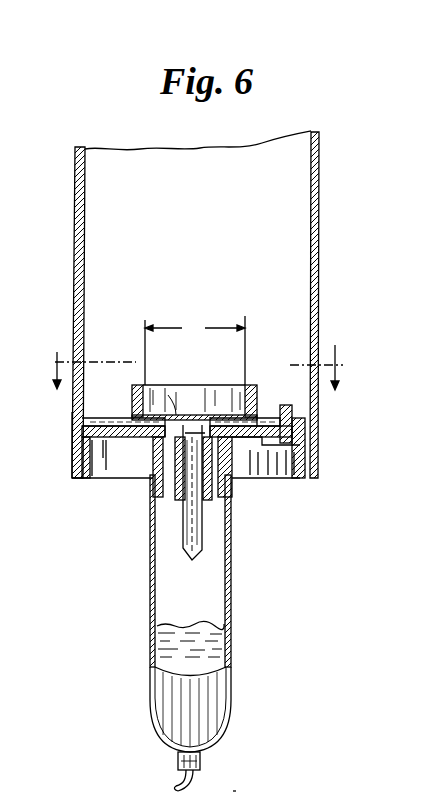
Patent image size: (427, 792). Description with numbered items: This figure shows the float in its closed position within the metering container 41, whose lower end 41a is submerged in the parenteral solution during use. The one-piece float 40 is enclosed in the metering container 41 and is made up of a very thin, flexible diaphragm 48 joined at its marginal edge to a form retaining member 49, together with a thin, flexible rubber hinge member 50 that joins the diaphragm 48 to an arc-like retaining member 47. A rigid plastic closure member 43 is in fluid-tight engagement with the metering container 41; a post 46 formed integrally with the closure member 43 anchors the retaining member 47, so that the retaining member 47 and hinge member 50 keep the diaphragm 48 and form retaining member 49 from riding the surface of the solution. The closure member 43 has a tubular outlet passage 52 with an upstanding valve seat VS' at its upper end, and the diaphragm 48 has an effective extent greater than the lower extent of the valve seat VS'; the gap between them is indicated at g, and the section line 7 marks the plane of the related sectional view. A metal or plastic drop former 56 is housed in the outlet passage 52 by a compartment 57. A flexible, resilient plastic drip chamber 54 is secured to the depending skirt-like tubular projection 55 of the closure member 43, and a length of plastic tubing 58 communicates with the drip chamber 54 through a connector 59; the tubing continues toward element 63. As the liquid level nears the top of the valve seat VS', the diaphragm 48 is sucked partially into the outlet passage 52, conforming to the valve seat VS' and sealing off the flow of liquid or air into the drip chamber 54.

The section line 7- 7 is at (200, 363).
The gap dimension g is at (195, 350).
The metering container 41 is at (322, 238).
The lower end 41a is at (68, 424).
The float 40 is at (133, 378).
The form retaining member 49 is at (133, 398).
The valve seat VS' is at (162, 377).
The closure member 43 is at (117, 443).
The tubular outlet passage 52 is at (206, 428).
The diaphragm 48 is at (190, 425).
The hinge member 50 is at (264, 425).
The post 46 is at (293, 410).
The retaining member 47 is at (300, 428).
The tubular projection 55 is at (153, 500).
The compartment 57 is at (213, 487).
The drop former 56 is at (196, 530).
The drip chamber 54 is at (231, 647).
The connector 59 is at (179, 757).
The plastic tubing 58 is at (179, 775).
The tube 63 is at (245, 786).